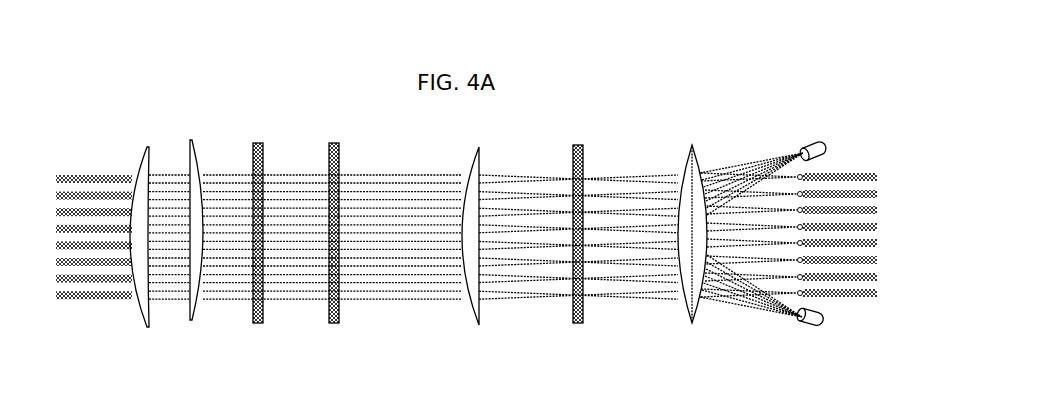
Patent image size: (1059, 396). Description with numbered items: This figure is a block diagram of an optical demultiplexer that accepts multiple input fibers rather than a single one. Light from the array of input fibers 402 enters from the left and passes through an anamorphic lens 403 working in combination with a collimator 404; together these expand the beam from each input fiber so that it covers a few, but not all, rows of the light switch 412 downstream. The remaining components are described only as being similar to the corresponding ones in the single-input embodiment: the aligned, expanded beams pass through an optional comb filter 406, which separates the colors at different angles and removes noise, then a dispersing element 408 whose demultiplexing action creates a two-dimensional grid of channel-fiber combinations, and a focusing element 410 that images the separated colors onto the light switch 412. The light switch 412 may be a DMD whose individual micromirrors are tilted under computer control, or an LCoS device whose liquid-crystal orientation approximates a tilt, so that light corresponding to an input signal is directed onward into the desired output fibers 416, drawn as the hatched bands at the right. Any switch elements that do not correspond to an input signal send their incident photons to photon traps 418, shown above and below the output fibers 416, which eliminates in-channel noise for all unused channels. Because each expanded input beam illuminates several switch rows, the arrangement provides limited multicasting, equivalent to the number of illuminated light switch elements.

The input light beams 402 is at (106, 167).
The anamorphic lens 403 is at (147, 327).
The collimator 404 is at (190, 145).
The first optical element (rod/plate) 406 is at (258, 324).
The second optical element (rod/plate) 408 is at (335, 143).
The third lens 410 is at (478, 326).
The light switch 412 is at (578, 145).
The output light beams 416 is at (851, 166).
The detectors 418 is at (811, 143).